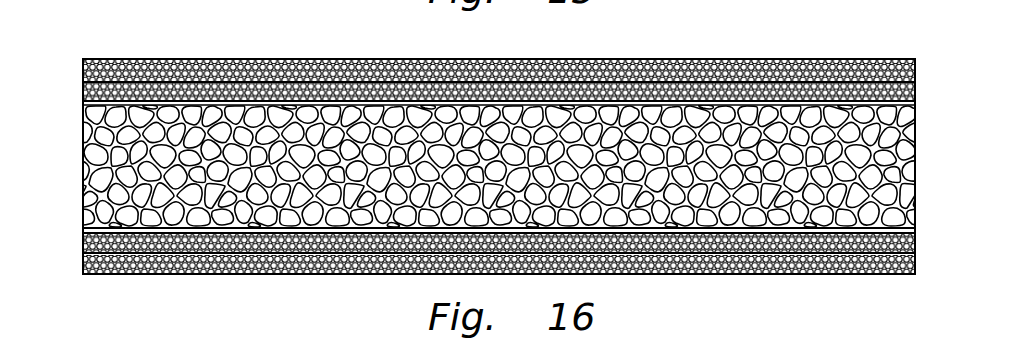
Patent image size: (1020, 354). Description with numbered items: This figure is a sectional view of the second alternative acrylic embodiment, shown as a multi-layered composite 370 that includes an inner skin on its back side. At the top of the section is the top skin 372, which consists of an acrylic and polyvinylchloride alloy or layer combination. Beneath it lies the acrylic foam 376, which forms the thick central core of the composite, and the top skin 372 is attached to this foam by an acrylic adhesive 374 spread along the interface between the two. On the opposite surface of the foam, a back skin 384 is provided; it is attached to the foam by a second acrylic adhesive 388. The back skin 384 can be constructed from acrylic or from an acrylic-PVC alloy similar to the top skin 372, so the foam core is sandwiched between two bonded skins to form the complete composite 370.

The multi-layered composite 370 is at (131, 56).
The top skin 372 is at (266, 58).
The acrylic adhesive 374 is at (83, 105).
The acrylic foam 376 is at (808, 132).
The back skin 384 is at (205, 275).
The acrylic adhesive 388 is at (83, 232).